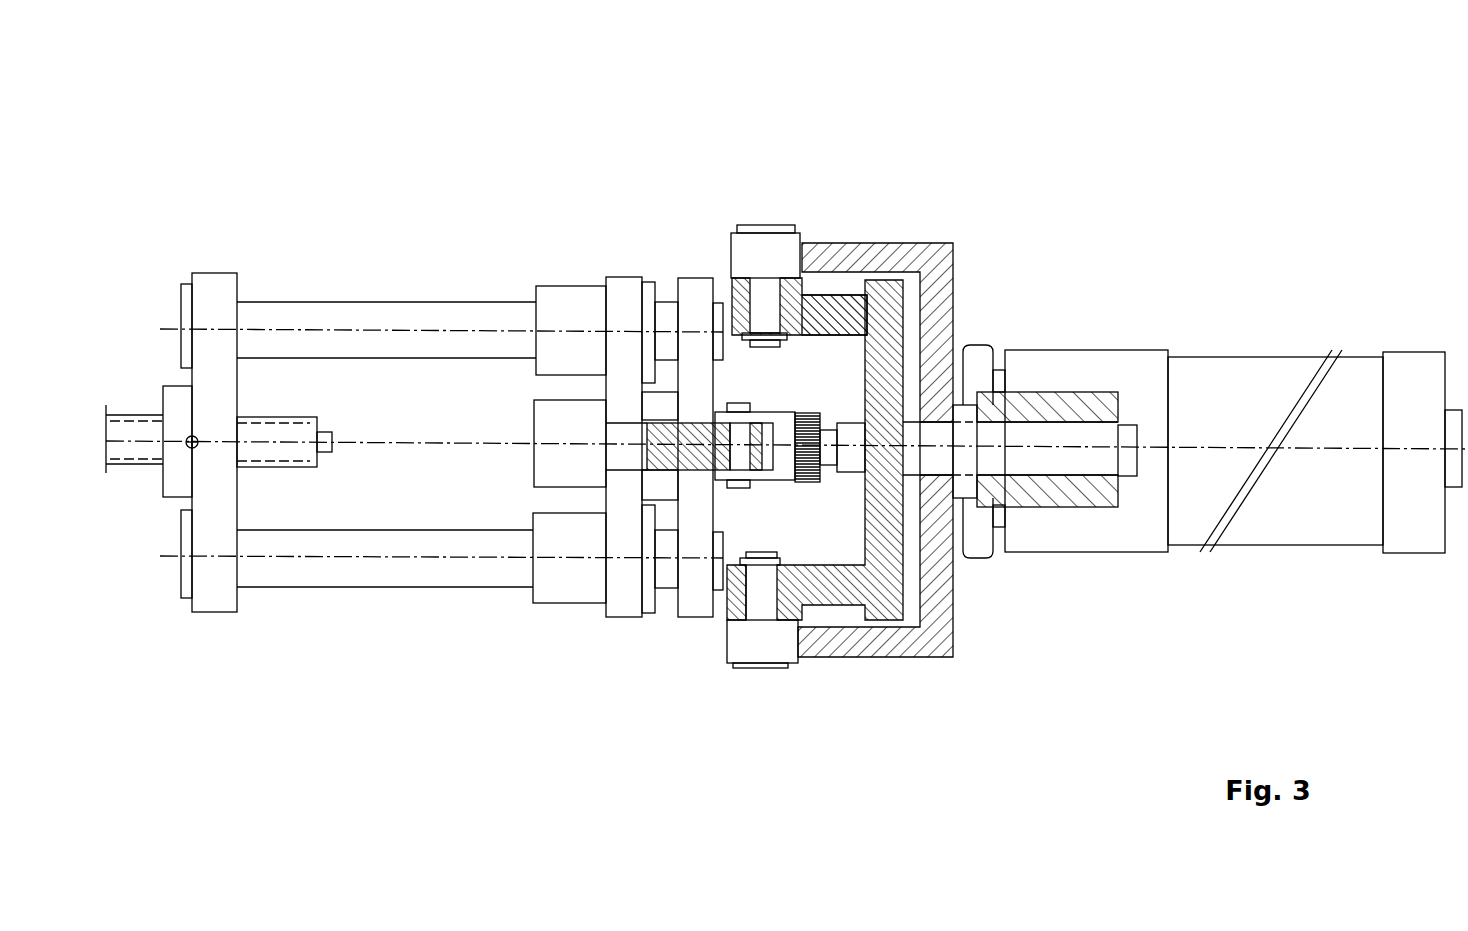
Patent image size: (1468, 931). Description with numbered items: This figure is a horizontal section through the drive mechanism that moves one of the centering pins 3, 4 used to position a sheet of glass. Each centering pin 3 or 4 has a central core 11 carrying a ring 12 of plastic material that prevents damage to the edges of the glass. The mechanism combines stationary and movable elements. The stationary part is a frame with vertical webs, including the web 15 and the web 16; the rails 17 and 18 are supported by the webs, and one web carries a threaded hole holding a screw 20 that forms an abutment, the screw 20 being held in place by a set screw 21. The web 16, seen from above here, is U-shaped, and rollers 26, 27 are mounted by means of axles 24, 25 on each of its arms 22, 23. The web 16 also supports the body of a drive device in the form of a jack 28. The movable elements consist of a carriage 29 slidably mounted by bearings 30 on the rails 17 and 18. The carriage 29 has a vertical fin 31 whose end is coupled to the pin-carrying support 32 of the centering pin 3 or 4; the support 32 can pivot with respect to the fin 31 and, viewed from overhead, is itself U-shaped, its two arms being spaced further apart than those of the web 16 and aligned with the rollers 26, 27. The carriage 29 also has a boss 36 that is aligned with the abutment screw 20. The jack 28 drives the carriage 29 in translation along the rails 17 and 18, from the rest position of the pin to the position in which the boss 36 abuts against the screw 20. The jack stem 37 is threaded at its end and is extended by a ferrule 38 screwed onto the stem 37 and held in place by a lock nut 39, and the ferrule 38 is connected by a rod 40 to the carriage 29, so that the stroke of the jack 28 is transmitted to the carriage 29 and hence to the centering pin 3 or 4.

The centering pin 3 is at (1088, 812).
The centering pin 4 is at (1019, 601).
The central core 11 is at (1025, 467).
The ring 12 is at (1070, 500).
The vertical web 15 is at (690, 300).
The vertical web 16 is at (885, 350).
The rail 17 is at (267, 590).
The rail 18 is at (267, 299).
The screw 20 is at (140, 450).
The set screw 21 is at (164, 264).
The arm 22 is at (830, 587).
The arm 23 is at (820, 315).
The axle 24 is at (765, 605).
The axle 25 is at (767, 295).
The roller 26 is at (743, 642).
The roller 27 is at (760, 245).
The jack 28 is at (1240, 375).
The carriage 29 is at (622, 307).
The bearings 30 is at (503, 775).
The vertical fin 31 is at (667, 452).
The pin-carrying support 32 is at (948, 312).
The boss 36 is at (473, 284).
The jack stem 37 is at (857, 432).
The ferrule 38 is at (783, 422).
The lock nut 39 is at (805, 477).
The rod 40 is at (733, 388).